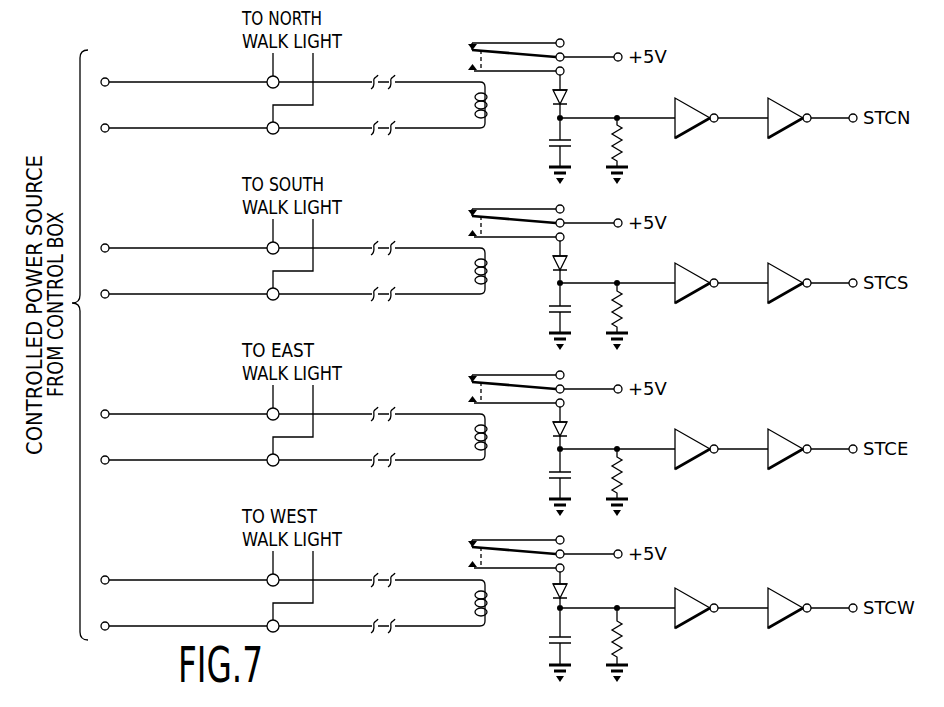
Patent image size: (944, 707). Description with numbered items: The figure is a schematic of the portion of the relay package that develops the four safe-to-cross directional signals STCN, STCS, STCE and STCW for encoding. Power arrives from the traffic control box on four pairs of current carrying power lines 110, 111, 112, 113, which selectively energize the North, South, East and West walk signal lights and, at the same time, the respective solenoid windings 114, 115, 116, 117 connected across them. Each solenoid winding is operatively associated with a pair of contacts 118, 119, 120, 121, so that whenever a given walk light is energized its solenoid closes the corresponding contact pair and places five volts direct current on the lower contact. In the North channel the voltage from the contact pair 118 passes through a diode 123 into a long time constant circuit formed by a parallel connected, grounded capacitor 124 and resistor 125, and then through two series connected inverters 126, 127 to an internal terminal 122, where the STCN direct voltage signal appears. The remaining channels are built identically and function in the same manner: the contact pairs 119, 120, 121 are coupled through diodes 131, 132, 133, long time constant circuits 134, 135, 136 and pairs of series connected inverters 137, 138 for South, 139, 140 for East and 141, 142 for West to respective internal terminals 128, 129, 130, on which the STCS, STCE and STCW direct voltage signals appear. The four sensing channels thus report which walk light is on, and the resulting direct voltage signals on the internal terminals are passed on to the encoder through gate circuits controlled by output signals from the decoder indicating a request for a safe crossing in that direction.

The power lines 110 is at (163, 86).
The power lines 111 is at (163, 252).
The power lines 112 is at (163, 418).
The power lines 113 is at (163, 584).
The solenoid winding 114 is at (487, 114).
The solenoid winding 115 is at (474, 269).
The solenoid winding 116 is at (487, 445).
The solenoid winding 117 is at (474, 599).
The contact pair 118 is at (470, 52).
The contact pair 119 is at (472, 217).
The contact pair 120 is at (472, 383).
The contact pair 121 is at (468, 547).
The internal terminal 122 is at (851, 122).
The diode 123 is at (572, 97).
The capacitor 124 is at (547, 152).
The resistor 125 is at (622, 150).
The inverter 126 is at (688, 98).
The inverter 127 is at (781, 98).
The internal terminal 128 is at (851, 287).
The internal terminal 129 is at (850, 453).
The internal terminal 130 is at (851, 612).
The diode 131 is at (570, 263).
The diode 132 is at (572, 428).
The diode 133 is at (570, 592).
The long time constant circuit 134 is at (546, 312).
The long time constant circuit 135 is at (546, 474).
The long time constant circuit 136 is at (546, 645).
The inverter 137 is at (691, 264).
The inverter 138 is at (784, 264).
The inverter 139 is at (692, 431).
The inverter 140 is at (786, 431).
The inverter 141 is at (691, 589).
The inverter 142 is at (784, 589).